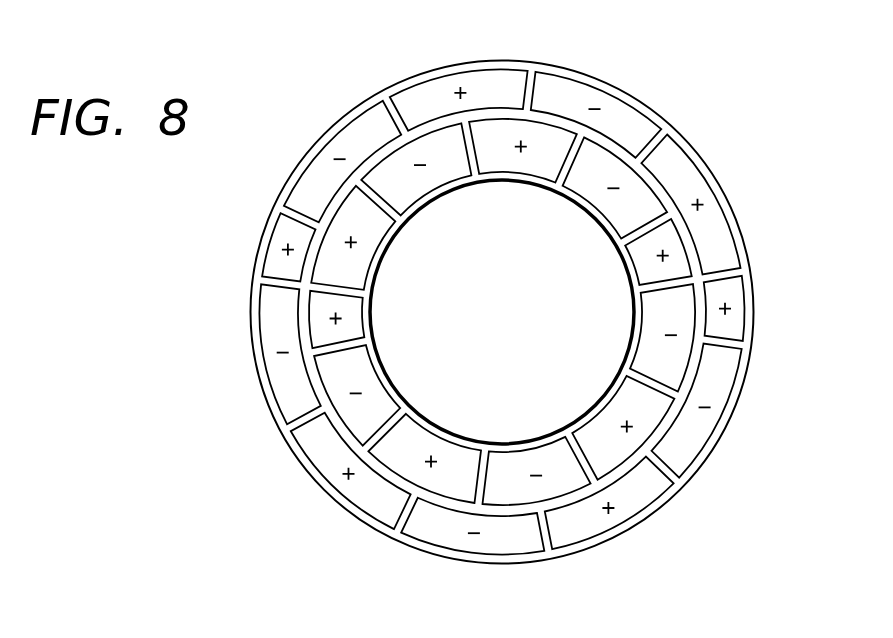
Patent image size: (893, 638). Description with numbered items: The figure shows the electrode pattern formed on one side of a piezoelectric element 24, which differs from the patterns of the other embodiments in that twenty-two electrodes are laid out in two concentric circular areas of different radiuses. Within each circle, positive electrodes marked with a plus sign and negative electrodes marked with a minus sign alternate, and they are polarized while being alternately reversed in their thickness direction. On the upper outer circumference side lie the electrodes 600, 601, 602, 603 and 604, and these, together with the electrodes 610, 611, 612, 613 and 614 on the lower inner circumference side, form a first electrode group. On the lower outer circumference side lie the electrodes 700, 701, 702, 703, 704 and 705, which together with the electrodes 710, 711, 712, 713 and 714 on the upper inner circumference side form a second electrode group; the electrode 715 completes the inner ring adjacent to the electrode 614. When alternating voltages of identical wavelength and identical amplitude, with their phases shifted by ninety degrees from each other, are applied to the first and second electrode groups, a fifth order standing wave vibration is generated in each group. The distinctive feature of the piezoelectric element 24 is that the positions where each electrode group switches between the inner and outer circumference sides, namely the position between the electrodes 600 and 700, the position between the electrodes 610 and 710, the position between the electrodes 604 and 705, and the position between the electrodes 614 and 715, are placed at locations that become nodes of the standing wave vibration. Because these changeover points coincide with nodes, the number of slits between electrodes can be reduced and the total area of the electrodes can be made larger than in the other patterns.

The piezoelectric element 24 is at (822, 525).
The electrode 600 is at (275, 250).
The electrode 601 is at (343, 145).
The electrode 602 is at (468, 75).
The electrode 603 is at (596, 103).
The electrode 604 is at (700, 175).
The electrode 700 is at (265, 345).
The electrode 701 is at (352, 487).
The electrode 702 is at (476, 543).
The electrode 703 is at (637, 500).
The electrode 704 is at (727, 387).
The electrode 705 is at (740, 296).
The electrode 610 is at (355, 317).
The electrode 611 is at (375, 390).
The electrode 612 is at (436, 447).
The electrode 613 is at (537, 457).
The electrode 614 is at (615, 408).
The electrode 710 is at (363, 251).
The electrode 711 is at (430, 177).
The electrode 712 is at (522, 162).
The electrode 713 is at (602, 195).
The electrode 714 is at (645, 262).
The electrode 715 is at (653, 330).